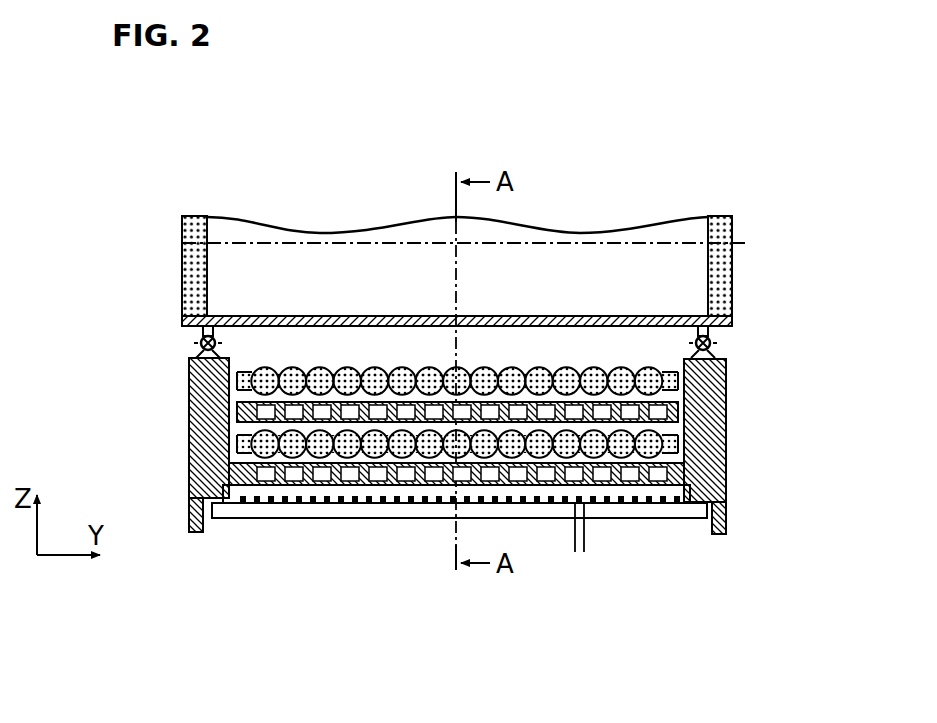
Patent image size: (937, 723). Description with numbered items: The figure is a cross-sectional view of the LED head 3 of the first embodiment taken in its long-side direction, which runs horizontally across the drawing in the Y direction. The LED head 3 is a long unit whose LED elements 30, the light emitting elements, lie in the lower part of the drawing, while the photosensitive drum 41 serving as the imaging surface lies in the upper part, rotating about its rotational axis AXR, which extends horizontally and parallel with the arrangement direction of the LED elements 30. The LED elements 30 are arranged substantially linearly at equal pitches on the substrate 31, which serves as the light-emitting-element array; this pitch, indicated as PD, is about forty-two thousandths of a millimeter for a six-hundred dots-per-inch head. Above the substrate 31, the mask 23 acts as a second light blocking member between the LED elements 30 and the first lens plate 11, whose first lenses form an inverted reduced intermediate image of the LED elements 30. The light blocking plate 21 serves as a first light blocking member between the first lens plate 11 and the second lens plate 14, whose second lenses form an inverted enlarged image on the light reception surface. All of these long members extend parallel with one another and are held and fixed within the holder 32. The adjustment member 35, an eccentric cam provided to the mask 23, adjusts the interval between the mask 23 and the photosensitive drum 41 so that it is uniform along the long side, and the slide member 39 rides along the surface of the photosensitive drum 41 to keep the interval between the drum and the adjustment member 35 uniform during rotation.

The LED head 3 is at (764, 377).
The first lens plate 11 is at (237, 442).
The second lens plate 14 is at (237, 378).
The light blocking plate 21 is at (237, 410).
The mask 23 is at (258, 473).
The LED elements 30 is at (648, 505).
The substrate 31 is at (345, 510).
The holder 32 is at (716, 436).
The adjustment member 35 is at (714, 349).
The slide member 39 is at (198, 332).
The photosensitive drum 41 is at (182, 285).
The rotational axis AXR is at (180, 243).
The pitch distance PD is at (618, 536).